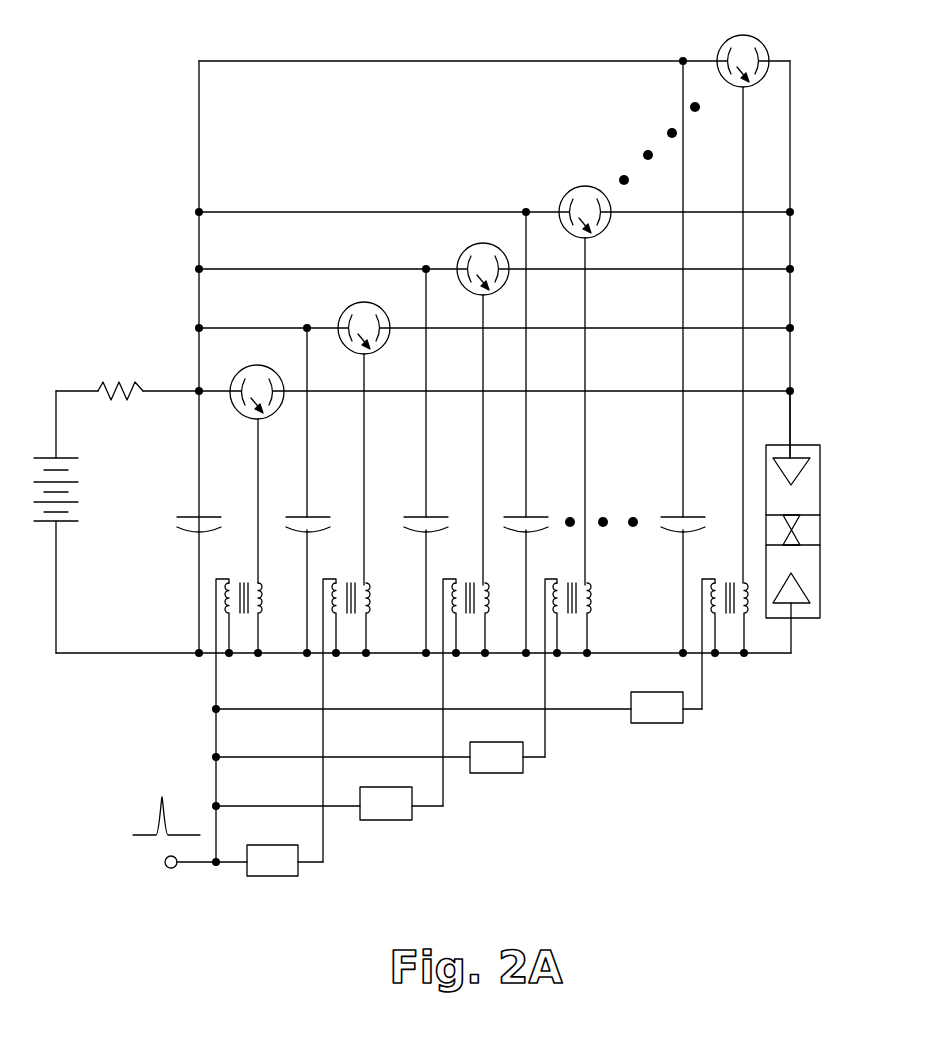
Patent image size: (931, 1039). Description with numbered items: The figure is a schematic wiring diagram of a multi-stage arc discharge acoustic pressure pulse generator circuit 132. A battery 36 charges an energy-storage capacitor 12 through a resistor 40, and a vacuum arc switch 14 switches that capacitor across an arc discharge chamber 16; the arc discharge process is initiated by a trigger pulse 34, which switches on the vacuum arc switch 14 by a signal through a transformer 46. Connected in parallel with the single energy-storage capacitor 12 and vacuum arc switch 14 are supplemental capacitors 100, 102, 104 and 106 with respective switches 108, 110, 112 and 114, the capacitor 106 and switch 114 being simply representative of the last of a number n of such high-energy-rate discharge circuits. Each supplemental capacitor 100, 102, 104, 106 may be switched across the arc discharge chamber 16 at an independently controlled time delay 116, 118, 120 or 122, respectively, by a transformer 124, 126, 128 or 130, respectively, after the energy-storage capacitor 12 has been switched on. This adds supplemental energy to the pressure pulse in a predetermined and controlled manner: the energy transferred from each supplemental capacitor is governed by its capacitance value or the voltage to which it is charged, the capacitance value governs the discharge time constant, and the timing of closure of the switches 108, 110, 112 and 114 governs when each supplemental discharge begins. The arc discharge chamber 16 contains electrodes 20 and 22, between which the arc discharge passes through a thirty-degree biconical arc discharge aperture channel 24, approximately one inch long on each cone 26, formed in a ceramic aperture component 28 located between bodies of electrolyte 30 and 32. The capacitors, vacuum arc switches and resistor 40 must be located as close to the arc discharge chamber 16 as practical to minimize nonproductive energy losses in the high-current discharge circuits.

The pulse generator circuit 132 is at (145, 112).
The battery 36 is at (78, 499).
The resistor 40 is at (140, 383).
The trigger pulse 34 is at (160, 813).
The vacuum arc switch 14 is at (266, 365).
The switch 108 is at (372, 302).
The switch 110 is at (490, 243).
The switch 112 is at (590, 186).
The switch 114 is at (742, 35).
The energy-storage capacitor 12 is at (195, 516).
The supplemental capacitor 100 is at (318, 516).
The supplemental capacitor 102 is at (438, 516).
The supplemental capacitor 104 is at (540, 516).
The supplemental capacitor 106 is at (698, 516).
The transformer 46 is at (258, 581).
The transformer 124 is at (365, 582).
The transformer 126 is at (485, 582).
The transformer 128 is at (587, 582).
The transformer 130 is at (744, 581).
The time delay 116 is at (263, 878).
The time delay 118 is at (388, 822).
The time delay 120 is at (497, 775).
The time delay 122 is at (656, 725).
The arc discharge chamber 16 is at (818, 424).
The body of electrolyte 30 is at (768, 472).
The electrode 20 is at (805, 465).
The biconical arc discharge aperture channel 24 is at (797, 515).
The ceramic aperture component 28 is at (812, 535).
The cone 26 is at (797, 546).
The electrode 22 is at (802, 586).
The body of electrolyte 32 is at (799, 608).